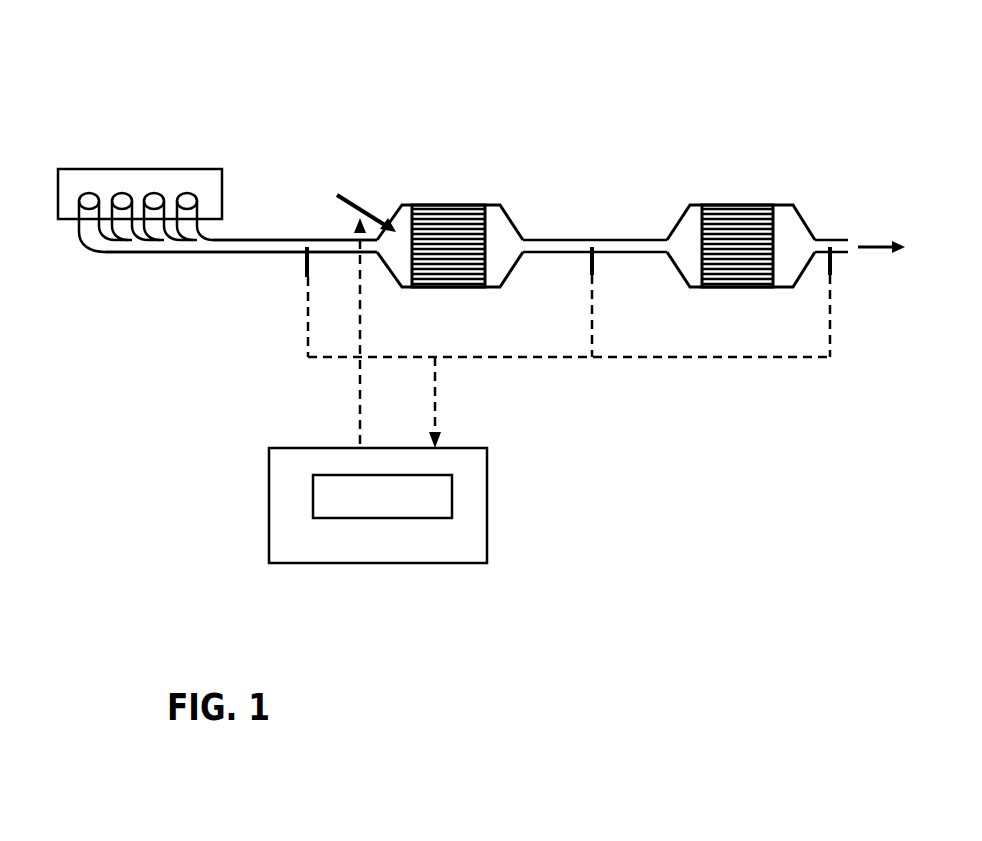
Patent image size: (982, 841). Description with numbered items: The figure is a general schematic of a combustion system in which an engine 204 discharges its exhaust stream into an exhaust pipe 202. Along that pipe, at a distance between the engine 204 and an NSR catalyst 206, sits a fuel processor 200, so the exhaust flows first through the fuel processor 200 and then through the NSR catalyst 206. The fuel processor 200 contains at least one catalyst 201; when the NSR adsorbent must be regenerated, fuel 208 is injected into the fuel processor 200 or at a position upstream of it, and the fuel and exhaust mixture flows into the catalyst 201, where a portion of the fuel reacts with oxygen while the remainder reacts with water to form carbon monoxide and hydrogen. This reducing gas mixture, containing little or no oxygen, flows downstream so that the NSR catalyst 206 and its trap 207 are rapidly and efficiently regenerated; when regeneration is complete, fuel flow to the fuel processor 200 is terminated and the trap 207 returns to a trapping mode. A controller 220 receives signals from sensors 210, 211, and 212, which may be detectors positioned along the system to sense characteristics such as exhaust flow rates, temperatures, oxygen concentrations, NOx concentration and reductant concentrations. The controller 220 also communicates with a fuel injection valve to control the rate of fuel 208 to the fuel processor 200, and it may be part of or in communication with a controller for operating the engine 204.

The fuel processor 200 is at (443, 203).
The catalyst 201 is at (462, 228).
The exhaust pipe 202 is at (254, 240).
The engine 204 is at (188, 169).
The NSR catalyst 206 is at (718, 193).
The trap 207 is at (738, 233).
The fuel 208 is at (322, 153).
The sensor 210 is at (305, 268).
The sensor 211 is at (593, 273).
The sensor 212 is at (832, 273).
The controller 220 is at (549, 460).